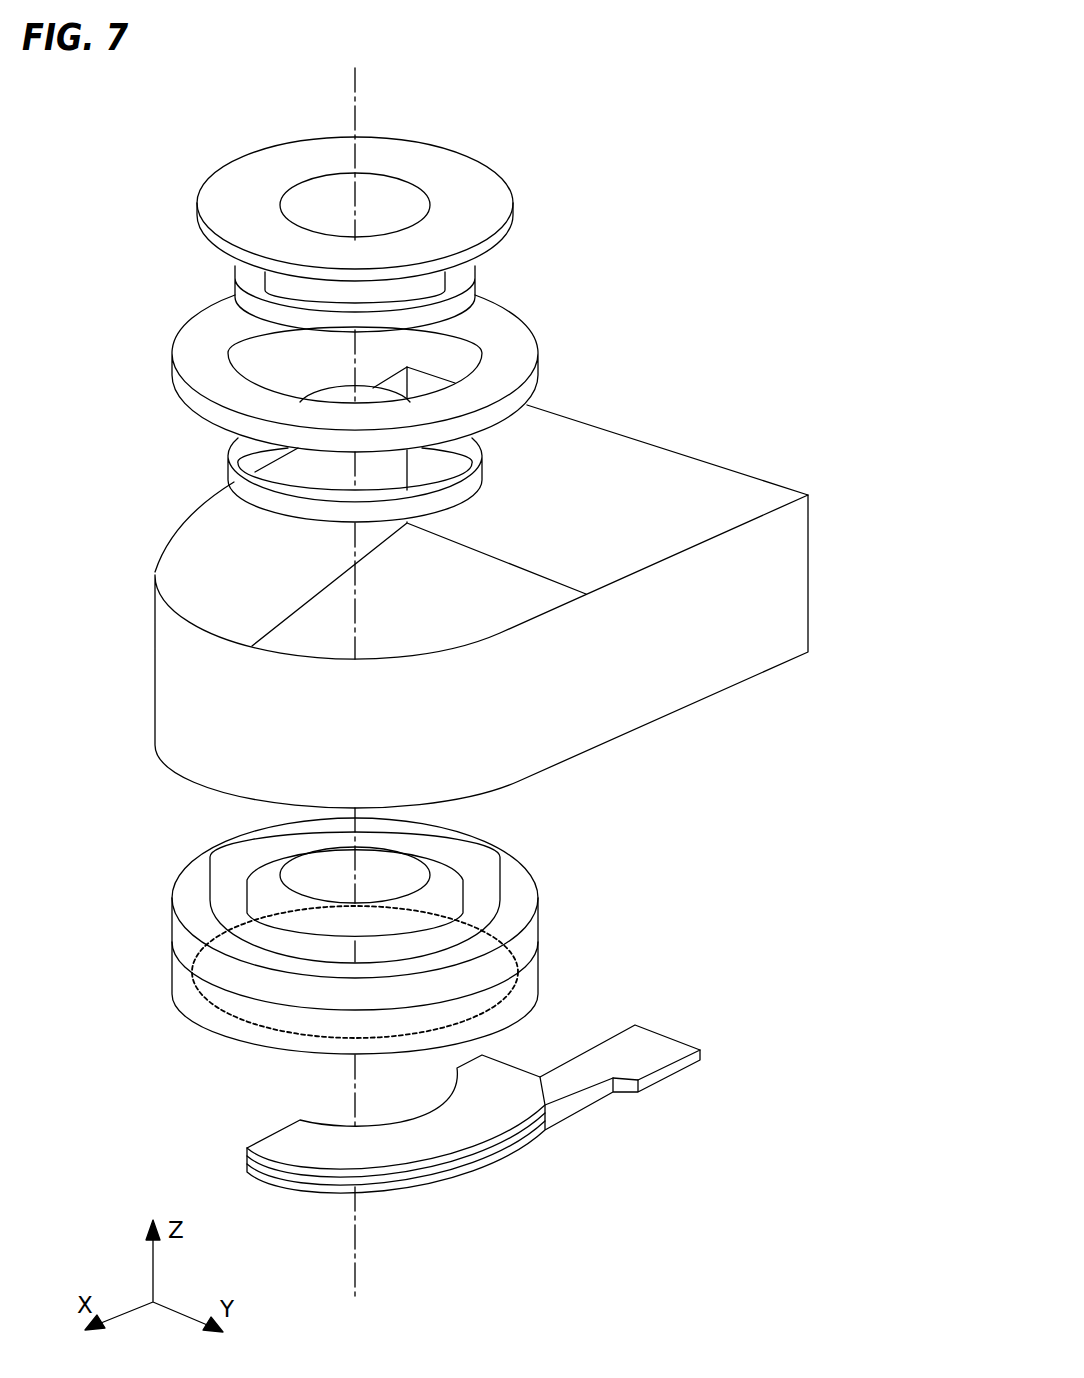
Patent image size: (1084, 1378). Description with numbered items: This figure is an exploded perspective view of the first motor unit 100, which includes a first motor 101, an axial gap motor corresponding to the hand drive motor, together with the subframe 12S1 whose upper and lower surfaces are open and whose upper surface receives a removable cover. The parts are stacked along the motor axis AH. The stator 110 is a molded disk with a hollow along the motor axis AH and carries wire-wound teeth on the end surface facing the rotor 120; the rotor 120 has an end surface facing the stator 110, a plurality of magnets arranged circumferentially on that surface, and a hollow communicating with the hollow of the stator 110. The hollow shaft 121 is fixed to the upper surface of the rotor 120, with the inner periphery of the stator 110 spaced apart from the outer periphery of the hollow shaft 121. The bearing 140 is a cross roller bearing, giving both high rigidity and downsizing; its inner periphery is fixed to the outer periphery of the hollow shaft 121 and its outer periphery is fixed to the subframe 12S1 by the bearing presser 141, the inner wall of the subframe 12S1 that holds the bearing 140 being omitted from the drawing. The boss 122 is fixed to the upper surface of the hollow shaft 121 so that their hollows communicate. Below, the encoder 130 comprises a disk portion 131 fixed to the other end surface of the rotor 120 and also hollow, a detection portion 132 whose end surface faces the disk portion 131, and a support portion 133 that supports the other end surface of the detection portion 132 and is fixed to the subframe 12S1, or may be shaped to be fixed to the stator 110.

The motor axis AH is at (357, 108).
The first motor unit 100 is at (836, 262).
The first motor 101 is at (699, 341).
The subframe 12S1 is at (707, 651).
The boss 122 is at (430, 175).
The hollow shaft 121 is at (260, 877).
The bearing presser 141 is at (525, 343).
The bearing 140 is at (455, 493).
The stator 110 is at (187, 928).
The rotor 120 is at (188, 993).
The encoder 130 is at (183, 1072).
The disk portion 131 is at (280, 1031).
The detection portion 132 is at (283, 1157).
The support portion 133 is at (272, 1170).